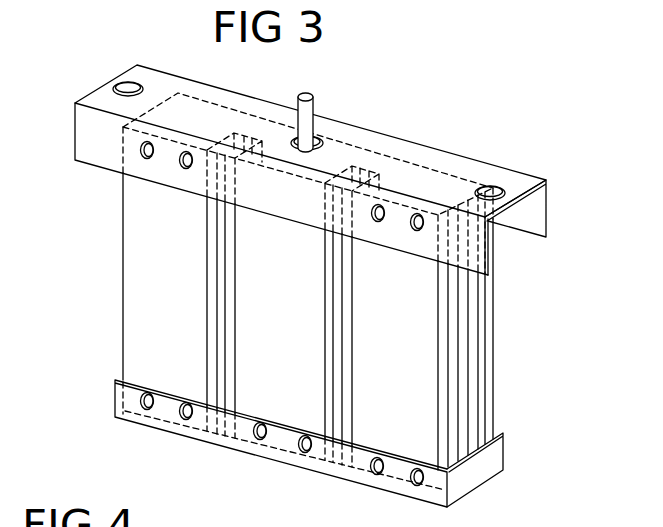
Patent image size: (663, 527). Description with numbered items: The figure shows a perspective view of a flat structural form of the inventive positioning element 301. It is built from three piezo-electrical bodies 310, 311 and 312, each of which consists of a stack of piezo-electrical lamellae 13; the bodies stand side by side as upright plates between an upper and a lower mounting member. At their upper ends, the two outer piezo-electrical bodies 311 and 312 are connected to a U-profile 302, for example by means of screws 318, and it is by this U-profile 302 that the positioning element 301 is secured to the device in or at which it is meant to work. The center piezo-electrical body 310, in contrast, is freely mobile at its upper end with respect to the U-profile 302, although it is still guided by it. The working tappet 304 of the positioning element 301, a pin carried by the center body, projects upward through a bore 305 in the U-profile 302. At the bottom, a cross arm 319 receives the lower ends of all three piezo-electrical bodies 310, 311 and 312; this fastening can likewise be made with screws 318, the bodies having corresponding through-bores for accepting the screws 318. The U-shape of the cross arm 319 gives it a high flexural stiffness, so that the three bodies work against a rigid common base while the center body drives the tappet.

The piezo-electrical lamellae 13 is at (302, 296).
The positioning element 301 is at (309, 453).
The U-profile 302 is at (515, 182).
The working tappet 304 is at (310, 112).
The bore 305 is at (320, 140).
The center piezo-electrical body 310 is at (287, 388).
The outer piezo-electrical body 311 is at (425, 383).
The outer piezo-electrical body 312 is at (133, 287).
The screws 318 is at (418, 216).
The cross arm 319 is at (457, 493).